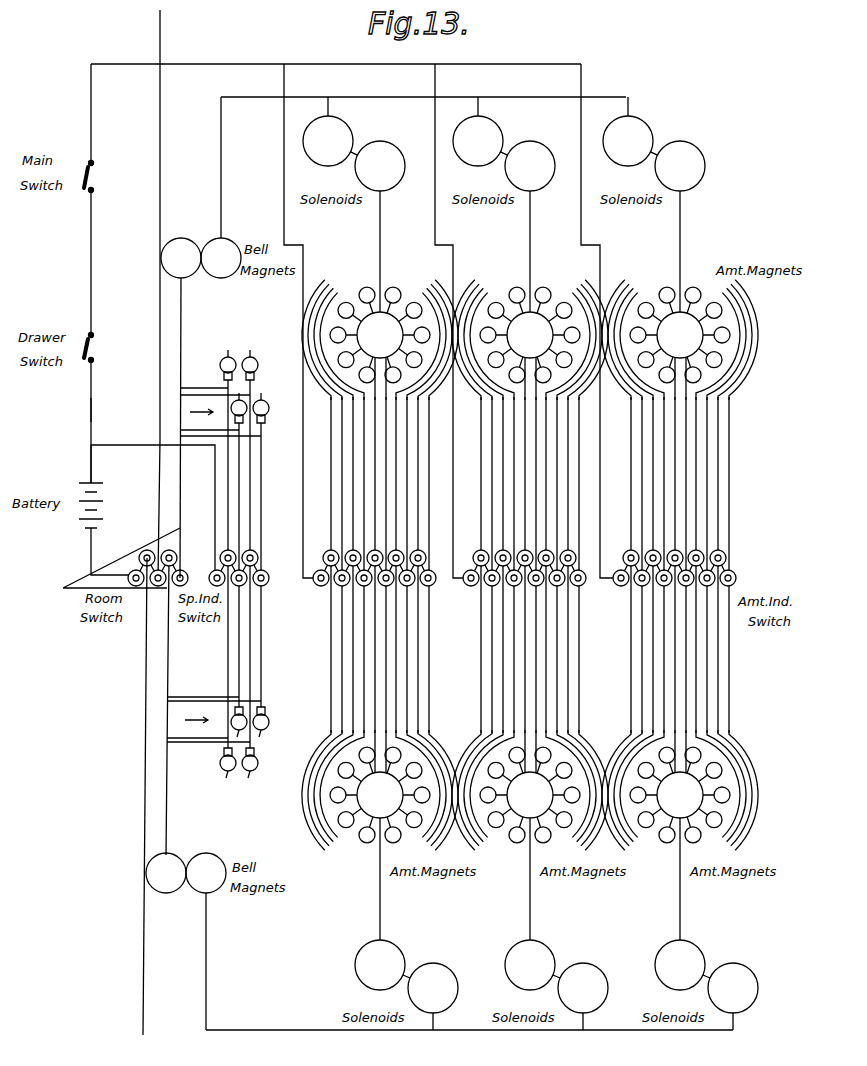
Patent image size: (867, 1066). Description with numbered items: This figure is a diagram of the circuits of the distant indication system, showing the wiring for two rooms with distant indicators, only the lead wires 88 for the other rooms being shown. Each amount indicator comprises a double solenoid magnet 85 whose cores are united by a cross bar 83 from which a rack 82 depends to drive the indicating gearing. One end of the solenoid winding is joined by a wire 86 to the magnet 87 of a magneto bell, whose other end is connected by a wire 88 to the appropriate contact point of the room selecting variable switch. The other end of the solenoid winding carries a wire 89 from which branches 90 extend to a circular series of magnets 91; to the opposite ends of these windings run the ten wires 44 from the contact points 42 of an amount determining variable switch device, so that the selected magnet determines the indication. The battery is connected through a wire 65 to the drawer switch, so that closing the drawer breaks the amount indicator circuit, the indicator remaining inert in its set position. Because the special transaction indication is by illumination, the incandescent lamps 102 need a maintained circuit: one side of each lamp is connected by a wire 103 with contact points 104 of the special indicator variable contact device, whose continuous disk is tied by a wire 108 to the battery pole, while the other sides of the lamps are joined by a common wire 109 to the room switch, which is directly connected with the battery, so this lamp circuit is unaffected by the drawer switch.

The wire 88 is at (160, 105).
The wire 86 is at (221, 150).
The rack 82 is at (91, 233).
The wire 65 is at (91, 410).
The wire 108 is at (117, 445).
The common wire 109 is at (108, 522).
The cross bar 83 is at (143, 931).
The magnet of magneto bell 87 is at (219, 276).
The incandescent lamps 102 is at (246, 346).
The wire 103 is at (238, 463).
The contact points 104 is at (263, 582).
The double solenoid magnet 85 is at (345, 134).
The wire 89 is at (380, 257).
The branch wires 90 is at (348, 290).
The magnets 91 is at (530, 565).
The wires 44 is at (698, 524).
The contact points 42 is at (430, 582).